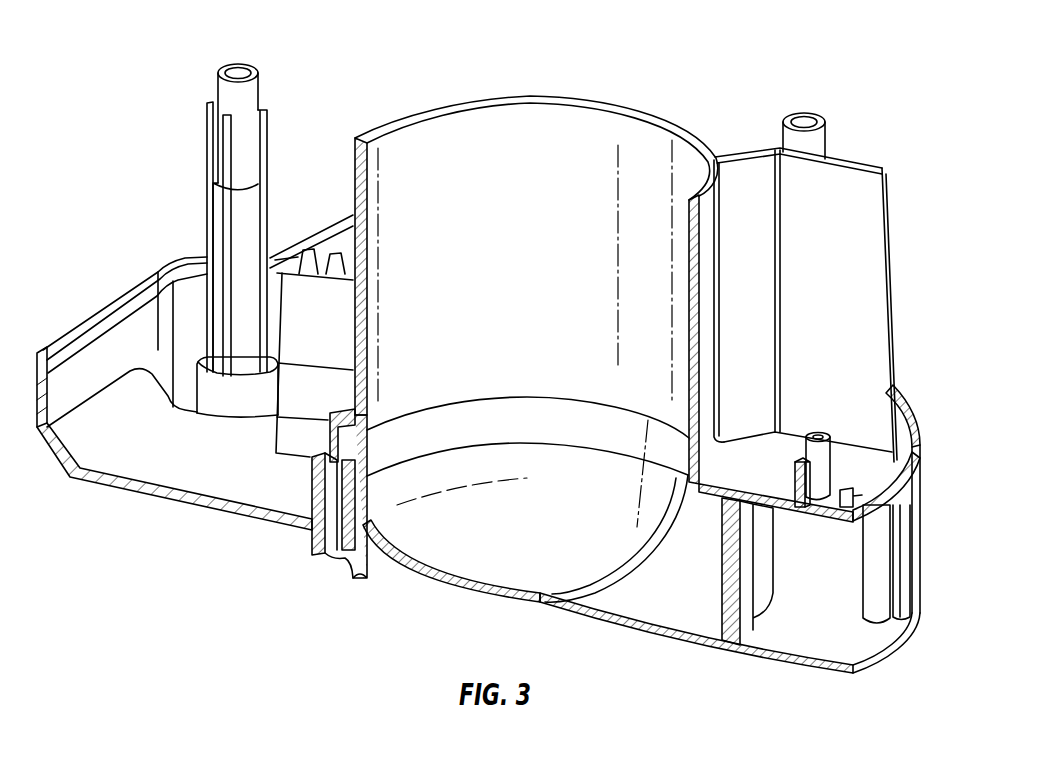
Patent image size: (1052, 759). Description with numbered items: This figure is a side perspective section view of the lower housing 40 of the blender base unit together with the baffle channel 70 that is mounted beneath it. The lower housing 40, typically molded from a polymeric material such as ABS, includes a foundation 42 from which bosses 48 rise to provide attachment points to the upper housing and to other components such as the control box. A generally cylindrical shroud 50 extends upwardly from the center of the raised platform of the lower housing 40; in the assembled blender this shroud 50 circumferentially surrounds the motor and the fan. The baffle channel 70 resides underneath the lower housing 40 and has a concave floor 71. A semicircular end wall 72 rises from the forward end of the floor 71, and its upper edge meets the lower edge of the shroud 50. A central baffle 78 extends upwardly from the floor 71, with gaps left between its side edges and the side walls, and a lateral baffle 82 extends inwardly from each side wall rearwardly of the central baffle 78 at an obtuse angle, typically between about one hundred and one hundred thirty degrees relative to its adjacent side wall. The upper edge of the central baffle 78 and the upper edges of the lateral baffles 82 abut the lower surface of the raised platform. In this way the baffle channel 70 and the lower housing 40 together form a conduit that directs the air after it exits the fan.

The lower housing 40 is at (900, 390).
The foundation 42 is at (174, 472).
The bosses 48 is at (253, 92).
The shroud 50 is at (653, 118).
The baffle channel 70 is at (655, 643).
The concave floor 71 is at (470, 590).
The semicircular end wall 72 is at (360, 490).
The central baffle 78 is at (735, 557).
The lateral baffle 82 is at (870, 545).